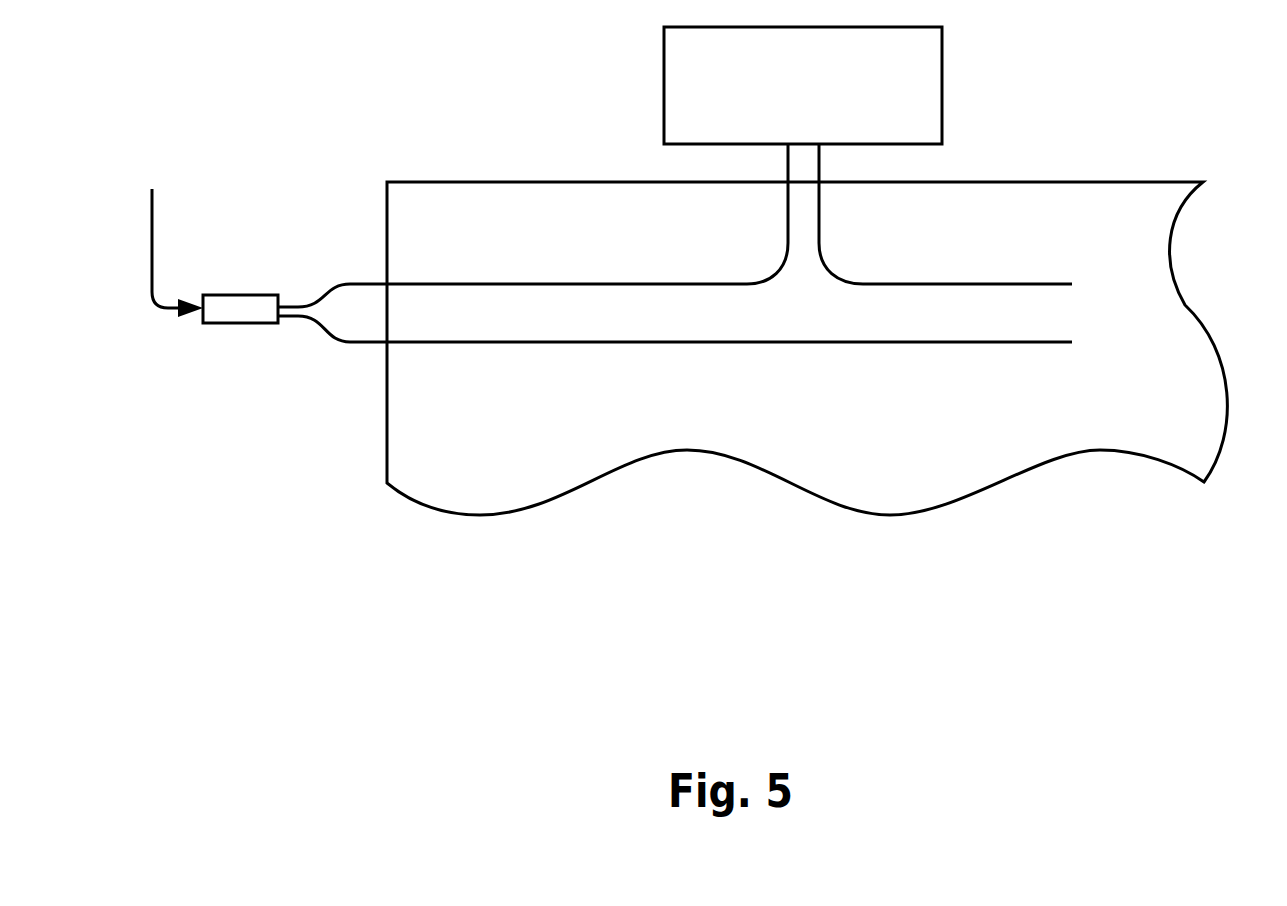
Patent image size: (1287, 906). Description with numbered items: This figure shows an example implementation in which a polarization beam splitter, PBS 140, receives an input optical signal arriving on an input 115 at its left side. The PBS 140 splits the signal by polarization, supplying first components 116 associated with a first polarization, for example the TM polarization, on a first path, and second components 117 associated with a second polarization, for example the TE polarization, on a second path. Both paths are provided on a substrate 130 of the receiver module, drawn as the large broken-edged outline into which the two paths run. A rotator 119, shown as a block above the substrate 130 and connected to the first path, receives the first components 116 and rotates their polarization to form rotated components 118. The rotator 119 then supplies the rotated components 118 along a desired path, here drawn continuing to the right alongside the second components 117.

The input optical fiber 115 is at (152, 219).
The first components 116 is at (557, 284).
The second components 117 is at (580, 344).
The rotated components 118 is at (970, 284).
The rotator 119 is at (942, 66).
The photonic integrated circuit chip 130 is at (1183, 164).
The PBS 140 is at (240, 293).